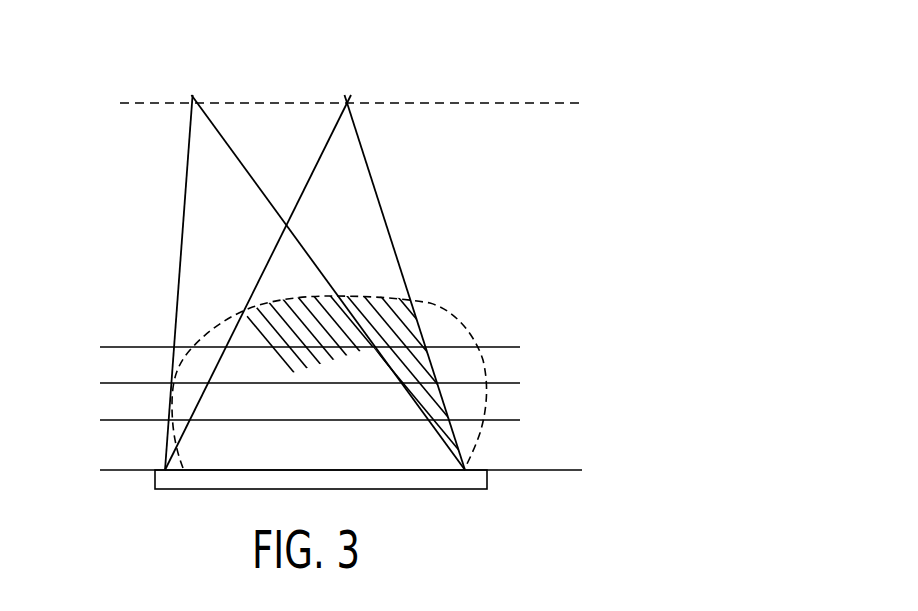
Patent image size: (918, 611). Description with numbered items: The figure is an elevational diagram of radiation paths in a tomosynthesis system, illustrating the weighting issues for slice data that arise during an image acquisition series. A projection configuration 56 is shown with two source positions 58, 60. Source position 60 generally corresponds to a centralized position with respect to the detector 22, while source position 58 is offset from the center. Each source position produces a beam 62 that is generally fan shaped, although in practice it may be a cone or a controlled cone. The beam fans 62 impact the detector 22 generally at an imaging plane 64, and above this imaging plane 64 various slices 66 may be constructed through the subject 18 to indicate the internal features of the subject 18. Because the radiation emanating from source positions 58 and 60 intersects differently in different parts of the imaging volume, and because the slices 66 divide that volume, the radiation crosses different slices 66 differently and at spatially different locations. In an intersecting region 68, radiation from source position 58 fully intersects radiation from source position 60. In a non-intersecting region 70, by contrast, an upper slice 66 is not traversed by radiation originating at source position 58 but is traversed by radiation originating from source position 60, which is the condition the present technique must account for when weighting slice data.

The subject 18 is at (430, 303).
The detector 22 is at (438, 490).
The projection configuration 56 is at (105, 287).
The source position 58 is at (193, 102).
The source position 60 is at (348, 102).
The beam 62 is at (202, 193).
The imaging plane 64 is at (550, 470).
The slices 66 is at (121, 348).
The intersecting region 68 is at (245, 318).
The non-intersecting region 70 is at (413, 325).